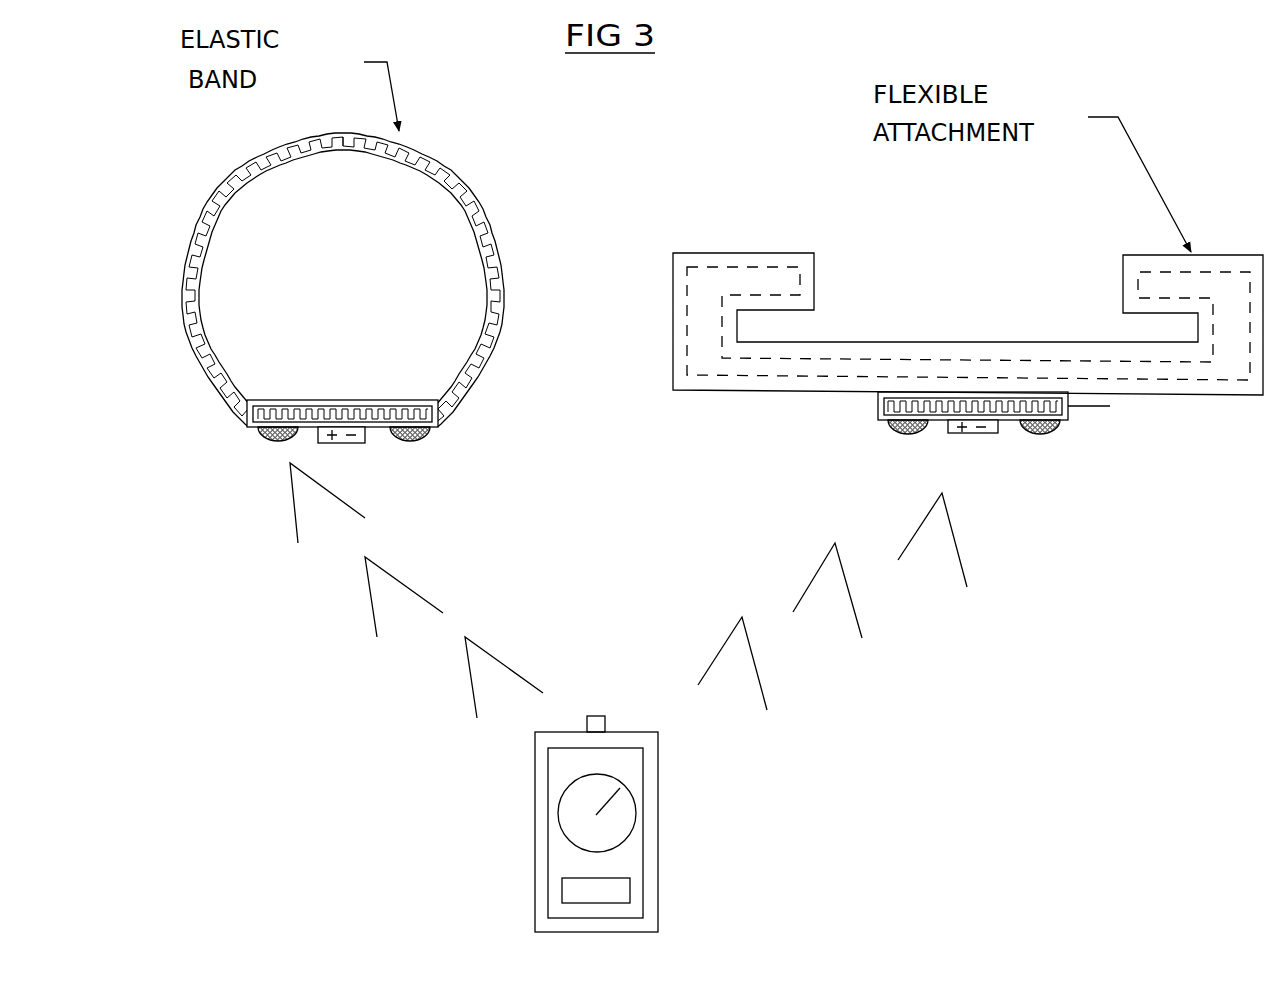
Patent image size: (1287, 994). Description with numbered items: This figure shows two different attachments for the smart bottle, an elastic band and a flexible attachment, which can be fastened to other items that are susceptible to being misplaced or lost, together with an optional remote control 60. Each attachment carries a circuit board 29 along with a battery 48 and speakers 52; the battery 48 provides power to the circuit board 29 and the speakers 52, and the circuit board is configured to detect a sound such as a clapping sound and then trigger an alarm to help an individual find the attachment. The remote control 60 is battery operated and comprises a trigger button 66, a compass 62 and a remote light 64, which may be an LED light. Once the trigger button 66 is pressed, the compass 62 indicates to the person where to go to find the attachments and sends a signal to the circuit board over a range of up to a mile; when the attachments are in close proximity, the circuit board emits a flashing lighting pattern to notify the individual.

The sensor module 29 is at (318, 399).
The battery 48 is at (311, 445).
The speakers 52 is at (258, 438).
The remote control 60 is at (661, 835).
The compass 62 is at (555, 813).
The remote light 64 is at (559, 891).
The trigger button 66 is at (608, 724).